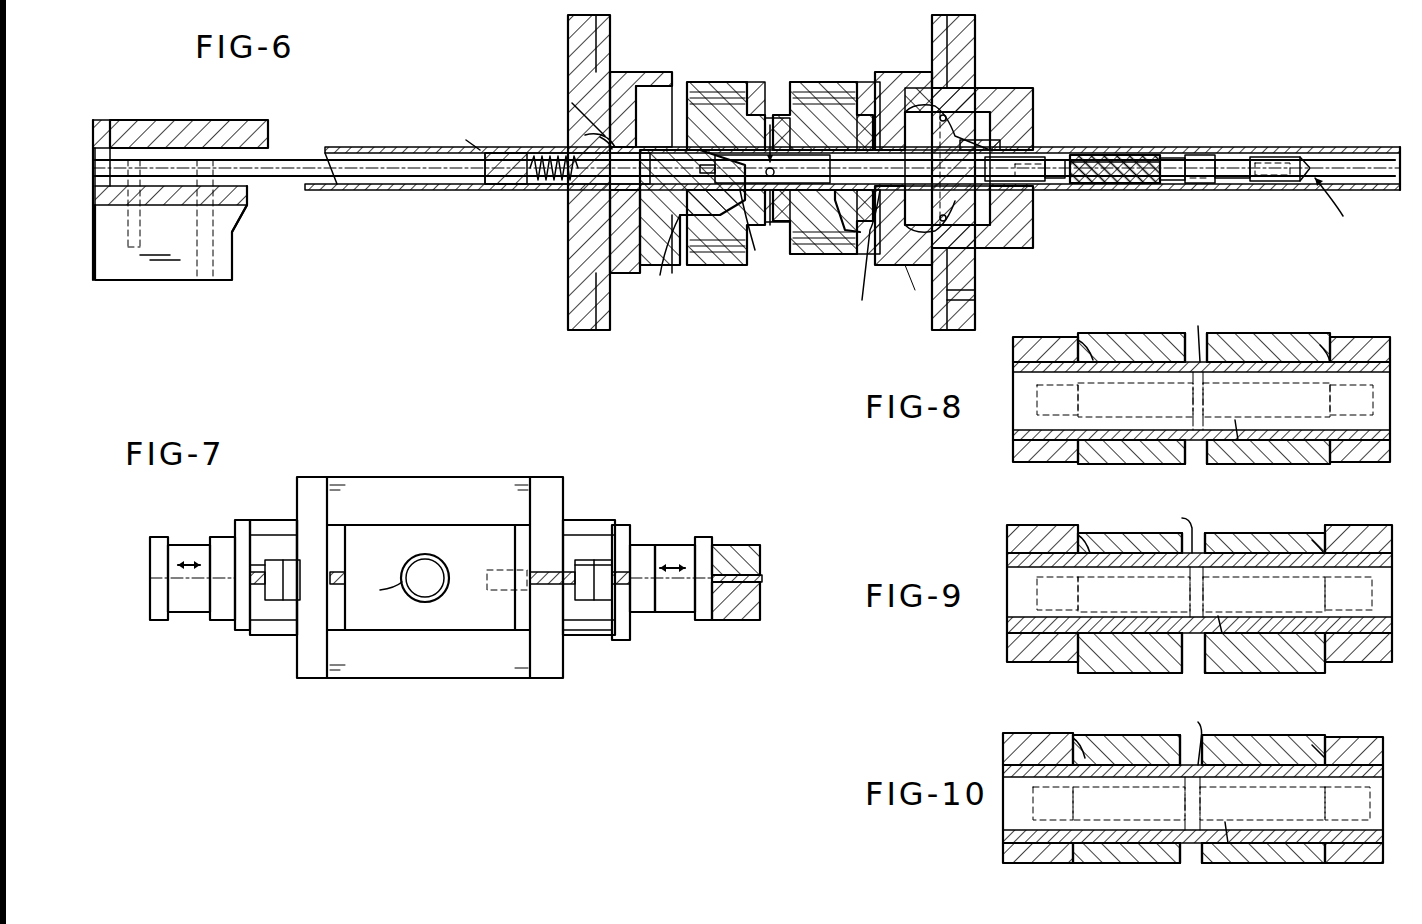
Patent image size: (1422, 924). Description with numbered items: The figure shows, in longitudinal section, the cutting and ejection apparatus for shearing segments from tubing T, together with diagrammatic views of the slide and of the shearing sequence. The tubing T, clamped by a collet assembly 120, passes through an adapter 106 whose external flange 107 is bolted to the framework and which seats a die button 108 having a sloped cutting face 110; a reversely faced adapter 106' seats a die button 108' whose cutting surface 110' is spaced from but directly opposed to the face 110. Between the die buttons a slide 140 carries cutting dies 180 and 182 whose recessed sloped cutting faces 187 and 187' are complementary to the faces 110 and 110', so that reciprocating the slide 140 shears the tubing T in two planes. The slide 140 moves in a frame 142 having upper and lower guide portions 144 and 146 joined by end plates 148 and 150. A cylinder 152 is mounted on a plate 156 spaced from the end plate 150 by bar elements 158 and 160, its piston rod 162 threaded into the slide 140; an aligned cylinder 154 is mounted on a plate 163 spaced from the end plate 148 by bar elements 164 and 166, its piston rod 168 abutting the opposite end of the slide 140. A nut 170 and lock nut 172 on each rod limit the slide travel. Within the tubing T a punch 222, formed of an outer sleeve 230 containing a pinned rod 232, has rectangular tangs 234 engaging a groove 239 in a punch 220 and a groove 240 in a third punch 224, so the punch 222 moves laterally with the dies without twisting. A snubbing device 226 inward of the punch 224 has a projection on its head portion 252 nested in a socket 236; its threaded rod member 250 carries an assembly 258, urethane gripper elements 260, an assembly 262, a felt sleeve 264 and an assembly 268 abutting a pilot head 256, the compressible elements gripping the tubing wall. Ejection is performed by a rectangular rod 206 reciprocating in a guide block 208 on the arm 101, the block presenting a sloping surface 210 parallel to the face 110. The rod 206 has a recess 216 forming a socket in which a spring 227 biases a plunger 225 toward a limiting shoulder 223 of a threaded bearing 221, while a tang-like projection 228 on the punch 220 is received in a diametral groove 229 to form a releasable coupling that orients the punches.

In FIG. 6, the arm 101 is at (157, 265).
In FIG. 6, the adapter 106 is at (991, 172).
In FIG. 6, the adapter 106' is at (589, 172).
In FIG. 6, the flange 107 is at (975, 288).
In FIG. 6, the die button 108 is at (856, 247).
In FIG. 8, the die button 108 is at (1352, 413).
In FIG. 9, the die button 108 is at (1356, 609).
In FIG. 10, the die button 108 is at (1351, 808).
In FIG. 6, the die button 108' is at (716, 244).
In FIG. 8, the die button 108' is at (1008, 399).
In FIG. 9, the die button 108' is at (1016, 577).
In FIG. 10, the die button 108' is at (1011, 786).
In FIG. 6, the cutting face 110 is at (856, 150).
In FIG. 8, the cutting face 110 is at (1301, 327).
In FIG. 9, the cutting face 110 is at (1299, 524).
In FIG. 10, the cutting face 110 is at (1306, 725).
In FIG. 6, the cutting surface 110' is at (721, 84).
In FIG. 8, the cutting surface 110' is at (1109, 327).
In FIG. 9, the cutting surface 110' is at (1102, 518).
In FIG. 10, the cutting surface 110' is at (1096, 722).
In FIG. 6, the collet assembly 120 is at (943, 214).
In FIG. 6, the cutting die 180 is at (815, 82).
In FIG. 8, the cutting die 180 is at (1246, 333).
In FIG. 9, the cutting die 180 is at (1238, 535).
In FIG. 10, the cutting die 180 is at (1245, 745).
In FIG. 6, the cutting die 182 is at (725, 80).
In FIG. 8, the cutting die 182 is at (1157, 333).
In FIG. 9, the cutting die 182 is at (1135, 535).
In FIG. 10, the cutting die 182 is at (1137, 745).
In FIG. 6, the cutting face 187 is at (921, 99).
In FIG. 8, the cutting face 187 is at (1359, 375).
In FIG. 9, the cutting face 187 is at (1351, 575).
In FIG. 10, the cutting face 187 is at (1354, 775).
In FIG. 6, the cutting face 187' is at (651, 116).
In FIG. 8, the cutting face 187' is at (1051, 377).
In FIG. 9, the cutting face 187' is at (1051, 577).
In FIG. 10, the cutting face 187' is at (1043, 776).
In FIG. 6, the ejector rod 206 is at (290, 156).
In FIG. 6, the guide block 208 is at (235, 118).
In FIG. 6, the sloping surface 210 is at (240, 208).
In FIG. 6, the recess 216 is at (498, 190).
In FIG. 6, the punch 220 is at (760, 152).
In FIG. 8, the punch 220 is at (1020, 418).
In FIG. 9, the punch 220 is at (1017, 578).
In FIG. 10, the punch 220 is at (1020, 808).
In FIG. 6, the bearing 221 is at (610, 175).
In FIG. 6, the punch 222 is at (834, 201).
In FIG. 8, the punch 222 is at (1168, 416).
In FIG. 9, the punch 222 is at (1163, 608).
In FIG. 10, the punch 222 is at (1125, 808).
In FIG. 6, the limiting shoulder 223 is at (592, 126).
In FIG. 6, the third punch 224 is at (845, 170).
In FIG. 8, the third punch 224 is at (1335, 398).
In FIG. 9, the third punch 224 is at (1338, 606).
In FIG. 10, the third punch 224 is at (1330, 788).
In FIG. 6, the plunger 225 is at (592, 140).
In FIG. 6, the snubbing device 226 is at (1339, 204).
In FIG. 6, the spring 227 is at (555, 183).
In FIG. 6, the tang-like projection 228 is at (692, 162).
In FIG. 6, the diametral groove 229 is at (650, 188).
In FIG. 6, the outer sleeve 230 is at (770, 218).
In FIG. 6, the rod-like element 232 is at (791, 171).
In FIG. 8, the rod-like element 232 is at (1205, 464).
In FIG. 9, the rod-like element 232 is at (1210, 666).
In FIG. 10, the rod-like element 232 is at (1210, 854).
In FIG. 6, the tang 234 is at (765, 169).
In FIG. 6, the rectangular socket 236 is at (990, 144).
In FIG. 6, the groove 239 is at (662, 231).
In FIG. 6, the groove 240 is at (885, 160).
In FIG. 6, the rod member 250 is at (1120, 155).
In FIG. 6, the head portion 252 is at (1033, 182).
In FIG. 6, the pilot head 256 is at (1286, 157).
In FIG. 6, the assembly 258 is at (1055, 158).
In FIG. 6, the gripper elements 260 is at (1080, 155).
In FIG. 6, the assembly 262 is at (1173, 155).
In FIG. 6, the sleeve 264 is at (1203, 155).
In FIG. 6, the assembly 268 is at (1233, 160).
In FIG. 7, the slide 140 is at (475, 620).
In FIG. 7, the frame 142 is at (436, 466).
In FIG. 7, the upper guide portion 144 is at (410, 512).
In FIG. 7, the lower guide portion 146 is at (405, 664).
In FIG. 7, the end plate 148 is at (307, 478).
In FIG. 7, the end plate 150 is at (555, 485).
In FIG. 7, the cylinder 152 is at (660, 543).
In FIG. 7, the cylinder 154 is at (187, 537).
In FIG. 7, the plate 156 is at (630, 636).
In FIG. 7, the bar element 158 is at (593, 510).
In FIG. 7, the bar element 160 is at (582, 631).
In FIG. 7, the piston rod 162 is at (520, 558).
In FIG. 7, the plate 163 is at (242, 520).
In FIG. 7, the bar element 164 is at (297, 503).
In FIG. 7, the bar element 166 is at (297, 635).
In FIG. 7, the piston rod 168 is at (342, 570).
In FIG. 7, the nut 170 is at (285, 603).
In FIG. 7, the lock nut 172 is at (272, 543).
In FIG. 6, the tubing T is at (467, 131).
In FIG. 7, the tubing T is at (382, 586).
In FIG. 8, the tubing T is at (1214, 371).
In FIG. 9, the tubing T is at (1195, 567).
In FIG. 10, the tubing T is at (1207, 773).